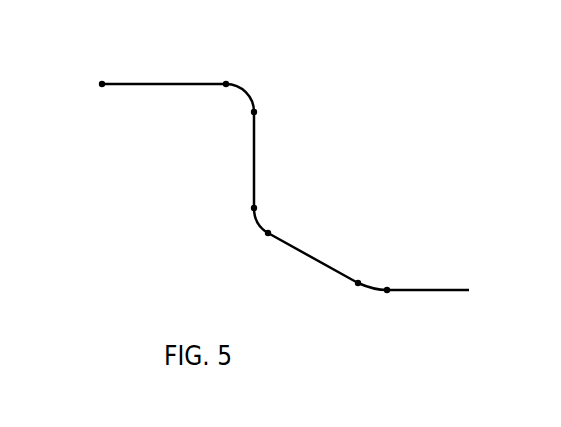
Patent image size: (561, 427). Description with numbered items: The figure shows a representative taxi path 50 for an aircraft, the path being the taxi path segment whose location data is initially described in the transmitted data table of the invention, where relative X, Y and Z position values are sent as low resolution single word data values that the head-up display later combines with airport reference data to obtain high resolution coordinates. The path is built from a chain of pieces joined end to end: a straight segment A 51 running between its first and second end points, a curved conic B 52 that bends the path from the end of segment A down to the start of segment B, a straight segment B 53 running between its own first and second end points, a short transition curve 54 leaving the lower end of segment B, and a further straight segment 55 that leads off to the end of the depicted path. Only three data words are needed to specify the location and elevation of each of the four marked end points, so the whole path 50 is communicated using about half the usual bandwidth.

The composite curve / profile 50 is at (193, 41).
The segment A (straight line segment) 51 is at (118, 87).
The conic B (conic arc segment) 52 is at (242, 85).
The segment B (straight line segment) 53 is at (255, 145).
The transition curve segment 54 is at (257, 222).
The straight line segment 55 is at (313, 253).